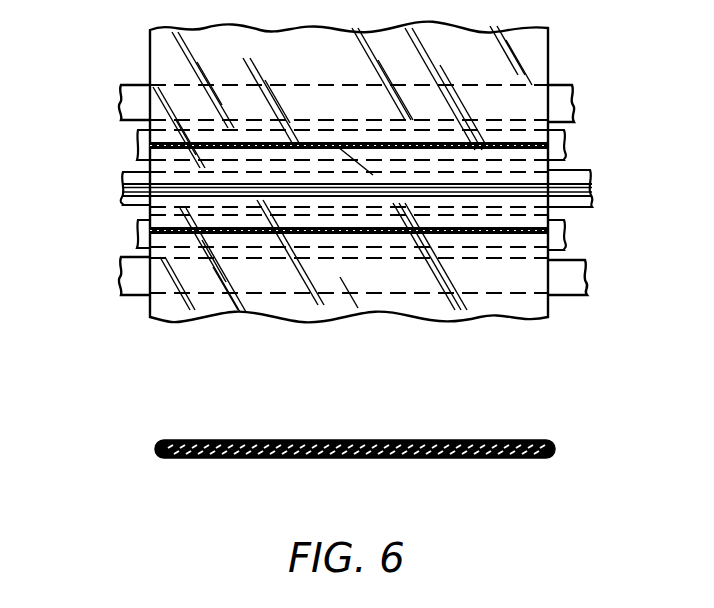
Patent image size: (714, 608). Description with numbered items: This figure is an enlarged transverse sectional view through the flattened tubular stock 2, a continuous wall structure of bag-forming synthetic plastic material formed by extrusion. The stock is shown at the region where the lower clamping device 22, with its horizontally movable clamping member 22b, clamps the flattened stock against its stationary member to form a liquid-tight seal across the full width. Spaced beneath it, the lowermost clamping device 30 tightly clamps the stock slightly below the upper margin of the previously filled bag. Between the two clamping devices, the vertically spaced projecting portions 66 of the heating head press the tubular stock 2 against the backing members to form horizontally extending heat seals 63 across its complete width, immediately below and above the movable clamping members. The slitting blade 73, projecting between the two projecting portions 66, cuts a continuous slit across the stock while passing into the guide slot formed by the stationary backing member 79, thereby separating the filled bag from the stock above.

The flattened tubular stock 2 is at (360, 318).
The lower clamping device 22 is at (570, 76).
The horizontally movable clamping member 22b is at (138, 104).
The heat seal 63 is at (150, 144).
The heat seal-forming projecting portion 66 is at (568, 146).
The stationary backing member 79 is at (576, 172).
The slitting blade 73 is at (585, 197).
The lowermost clamping device 30 is at (555, 302).